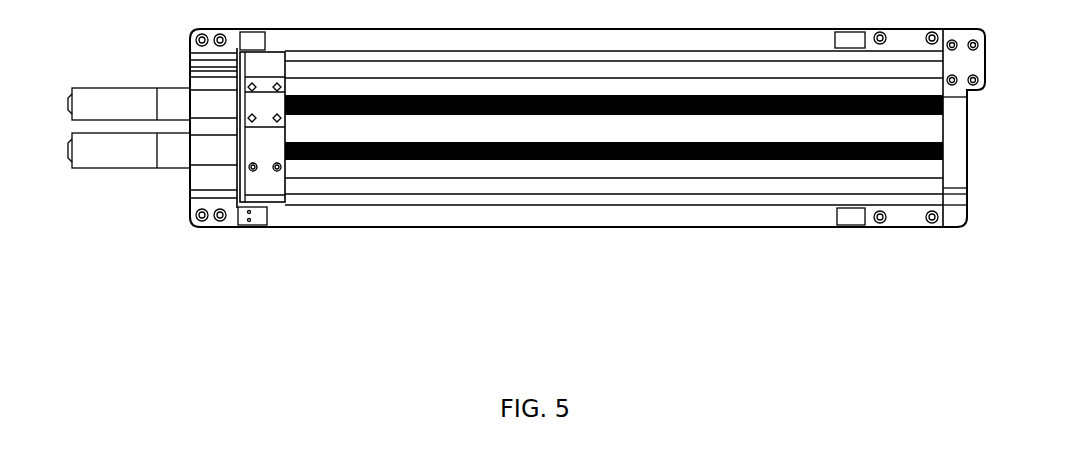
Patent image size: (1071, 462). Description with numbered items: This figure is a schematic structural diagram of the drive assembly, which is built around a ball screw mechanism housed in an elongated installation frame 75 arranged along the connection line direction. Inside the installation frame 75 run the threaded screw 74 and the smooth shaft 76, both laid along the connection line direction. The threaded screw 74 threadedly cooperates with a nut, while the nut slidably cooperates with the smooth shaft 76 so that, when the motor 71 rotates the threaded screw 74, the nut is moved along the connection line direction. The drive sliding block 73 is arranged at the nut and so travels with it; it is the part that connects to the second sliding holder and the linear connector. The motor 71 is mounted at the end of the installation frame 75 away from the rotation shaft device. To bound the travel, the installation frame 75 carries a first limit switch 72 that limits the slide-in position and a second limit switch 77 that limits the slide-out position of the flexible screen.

The motor 71 is at (123, 154).
The first limit switch 72 is at (264, 228).
The drive sliding block 73 is at (278, 174).
The threaded screw 74 is at (485, 158).
The installation frame 75 is at (644, 217).
The smooth shaft 76 is at (769, 185).
The second limit switch 77 is at (855, 222).